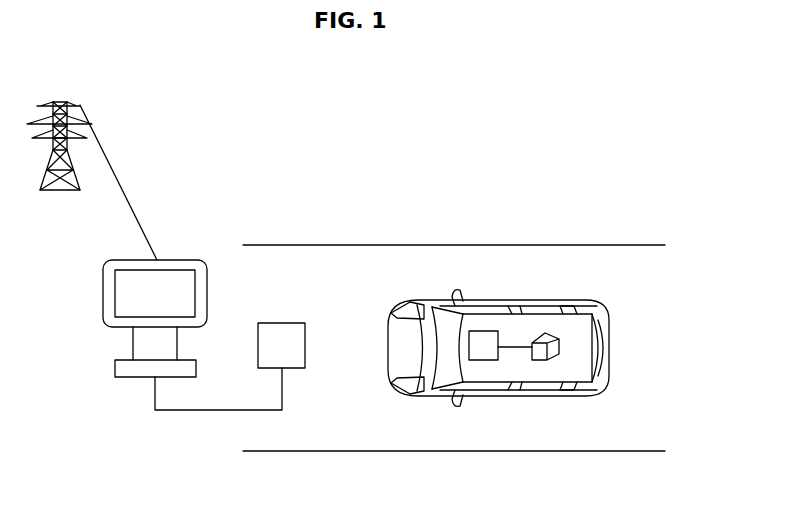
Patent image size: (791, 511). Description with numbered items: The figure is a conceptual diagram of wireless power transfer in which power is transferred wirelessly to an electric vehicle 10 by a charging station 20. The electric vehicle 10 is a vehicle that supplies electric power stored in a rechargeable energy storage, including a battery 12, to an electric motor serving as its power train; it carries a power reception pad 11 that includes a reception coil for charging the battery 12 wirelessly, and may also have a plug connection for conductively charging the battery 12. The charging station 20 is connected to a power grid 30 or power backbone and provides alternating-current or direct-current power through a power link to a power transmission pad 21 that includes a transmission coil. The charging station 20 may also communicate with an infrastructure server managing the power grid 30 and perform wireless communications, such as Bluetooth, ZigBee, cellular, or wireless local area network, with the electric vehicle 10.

The electric vehicle 10 is at (509, 313).
The power reception pad 11 is at (482, 330).
The battery 12 is at (543, 332).
The charging station 20 is at (173, 258).
The power transmission pad 21 is at (279, 322).
The power grid 30 is at (58, 100).